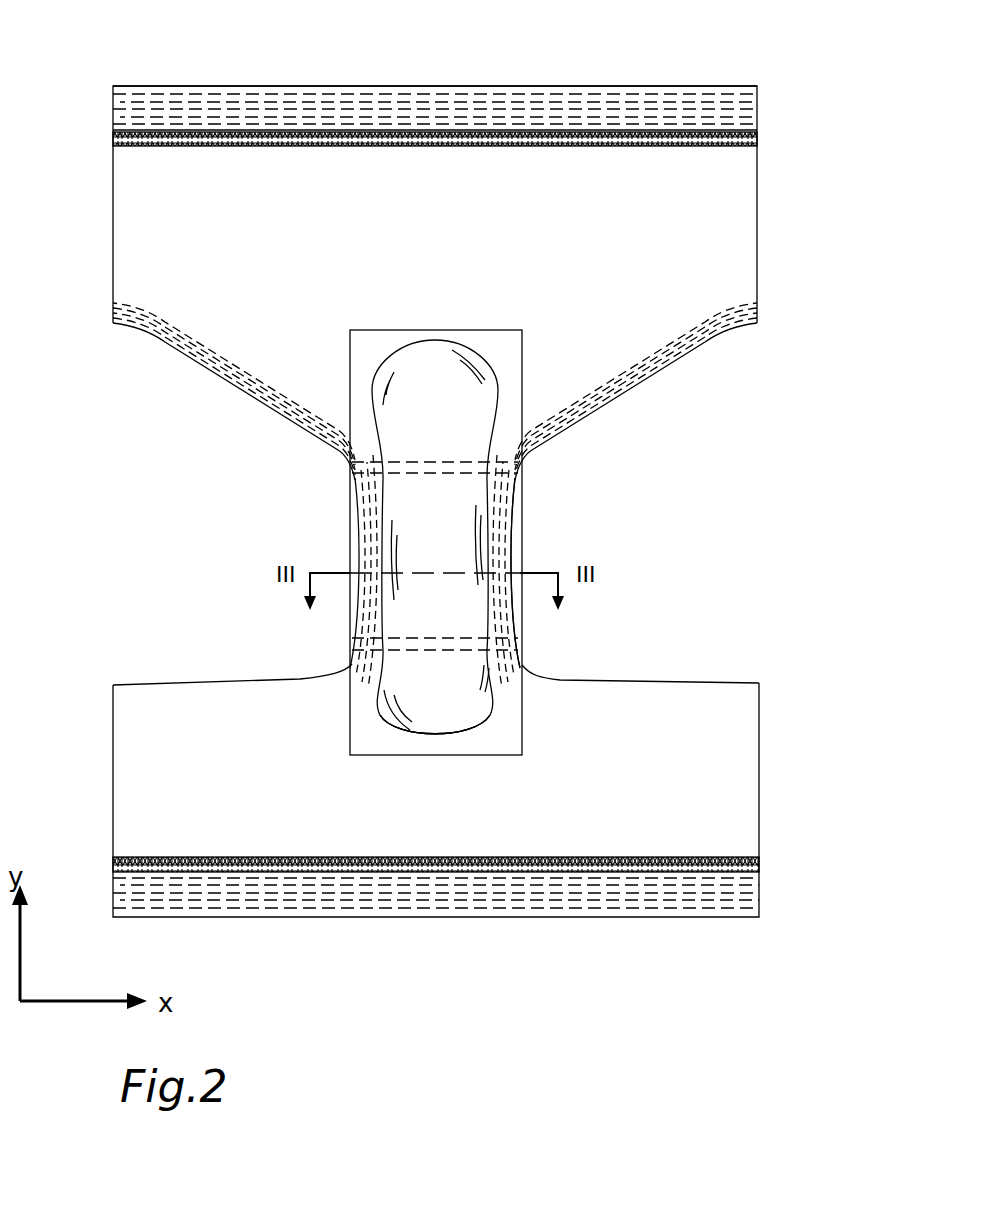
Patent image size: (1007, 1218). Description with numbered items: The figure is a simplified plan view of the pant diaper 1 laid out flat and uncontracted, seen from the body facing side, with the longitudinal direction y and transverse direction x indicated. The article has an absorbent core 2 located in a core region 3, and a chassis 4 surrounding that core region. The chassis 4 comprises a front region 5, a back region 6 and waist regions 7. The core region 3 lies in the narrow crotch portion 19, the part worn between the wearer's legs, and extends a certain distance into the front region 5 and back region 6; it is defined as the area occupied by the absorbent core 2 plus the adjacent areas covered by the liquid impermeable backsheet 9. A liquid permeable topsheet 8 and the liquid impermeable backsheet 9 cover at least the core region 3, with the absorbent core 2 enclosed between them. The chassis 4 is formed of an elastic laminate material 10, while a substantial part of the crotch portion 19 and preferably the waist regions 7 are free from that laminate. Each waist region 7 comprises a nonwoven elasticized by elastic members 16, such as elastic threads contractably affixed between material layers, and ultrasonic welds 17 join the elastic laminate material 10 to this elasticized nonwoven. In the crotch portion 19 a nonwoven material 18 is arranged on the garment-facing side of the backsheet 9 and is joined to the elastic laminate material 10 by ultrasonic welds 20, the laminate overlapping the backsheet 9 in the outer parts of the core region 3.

The pant diaper 1 is at (808, 70).
The absorbent core 2 is at (452, 528).
The core region 3 is at (503, 356).
The chassis 4 is at (100, 275).
The front region 5 is at (244, 758).
The back region 6 is at (274, 228).
The waist region 7 is at (594, 100).
The liquid permeable topsheet 8 is at (510, 707).
The liquid impermeable backsheet 9 is at (510, 707).
The elastic laminate material 10 is at (210, 312).
The elastic members 16 is at (260, 100).
The ultrasonic welds 17 is at (156, 140).
The nonwoven material 18 is at (495, 490).
The crotch portion 19 is at (360, 510).
The ultrasonic welds 20 is at (350, 467).